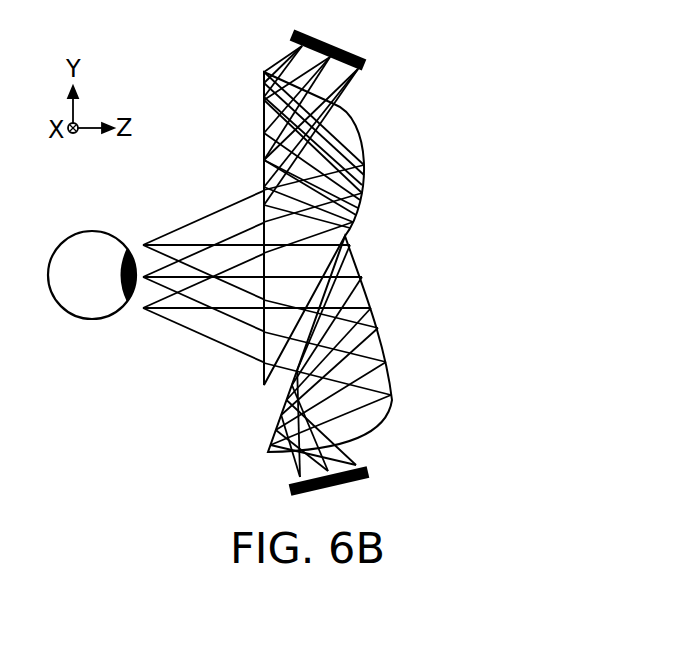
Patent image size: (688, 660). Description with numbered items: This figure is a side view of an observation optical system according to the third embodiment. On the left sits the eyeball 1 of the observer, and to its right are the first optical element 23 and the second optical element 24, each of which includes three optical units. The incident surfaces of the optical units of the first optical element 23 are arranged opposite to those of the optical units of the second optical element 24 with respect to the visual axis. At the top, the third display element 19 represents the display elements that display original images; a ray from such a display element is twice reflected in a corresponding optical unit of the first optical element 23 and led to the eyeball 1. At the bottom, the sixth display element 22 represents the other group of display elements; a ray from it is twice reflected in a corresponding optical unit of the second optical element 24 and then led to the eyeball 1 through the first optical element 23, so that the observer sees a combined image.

The eyeball 1 is at (82, 238).
The third display element 19 is at (346, 55).
The sixth display element 22 is at (366, 478).
The first optical element 23 is at (273, 147).
The second optical element 24 is at (383, 410).